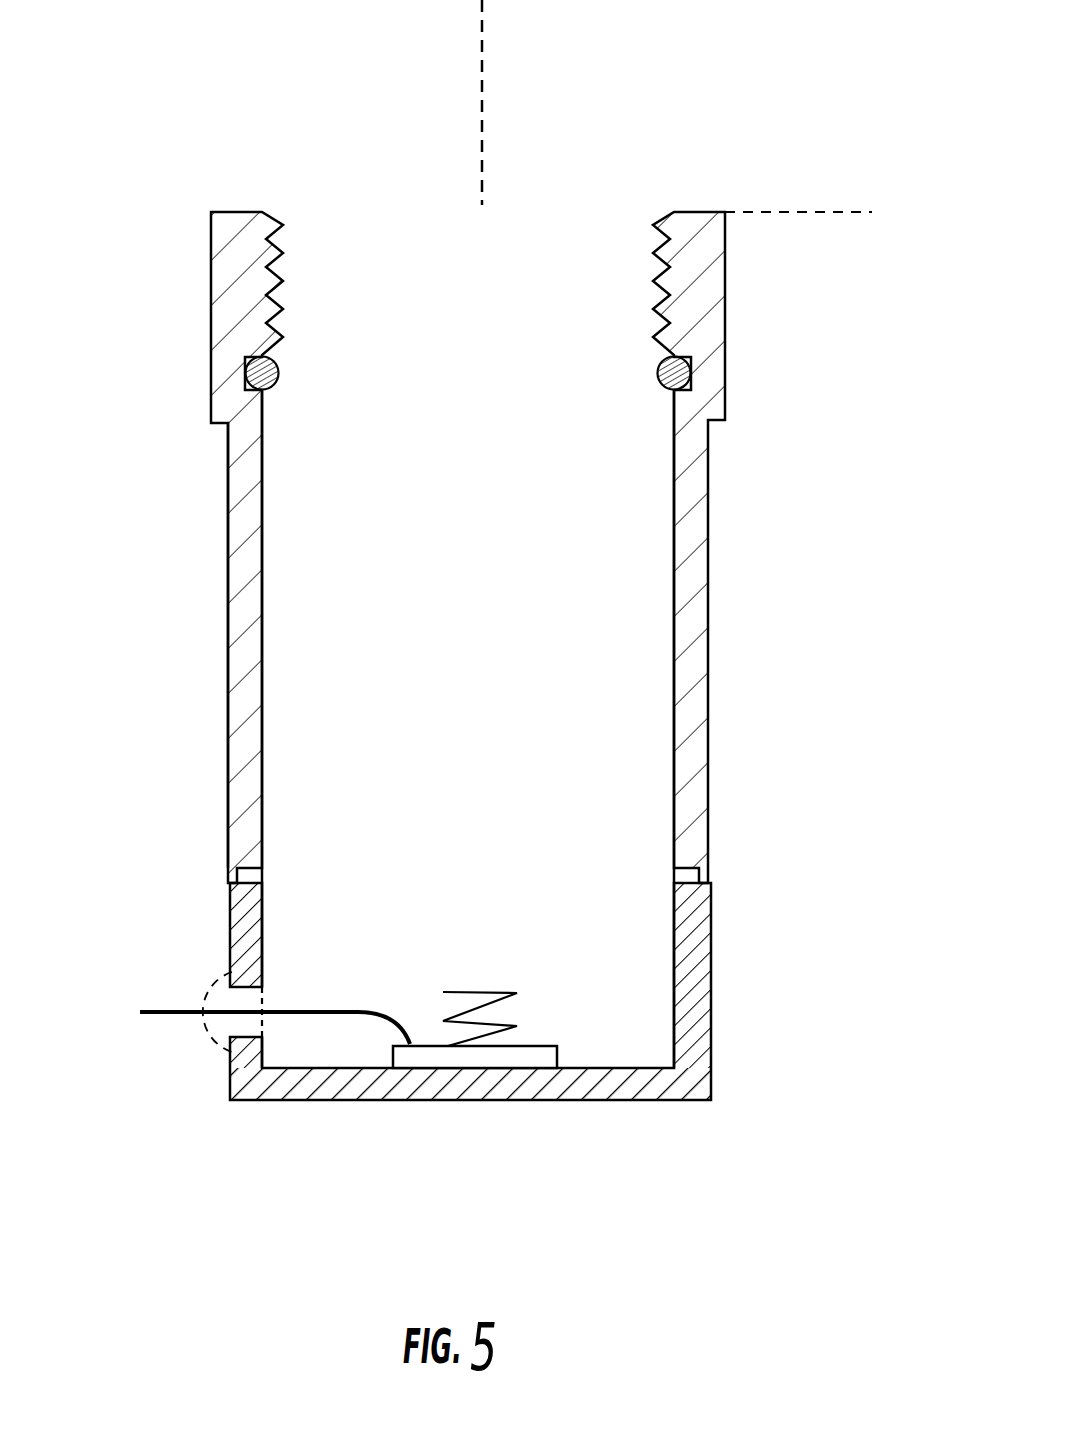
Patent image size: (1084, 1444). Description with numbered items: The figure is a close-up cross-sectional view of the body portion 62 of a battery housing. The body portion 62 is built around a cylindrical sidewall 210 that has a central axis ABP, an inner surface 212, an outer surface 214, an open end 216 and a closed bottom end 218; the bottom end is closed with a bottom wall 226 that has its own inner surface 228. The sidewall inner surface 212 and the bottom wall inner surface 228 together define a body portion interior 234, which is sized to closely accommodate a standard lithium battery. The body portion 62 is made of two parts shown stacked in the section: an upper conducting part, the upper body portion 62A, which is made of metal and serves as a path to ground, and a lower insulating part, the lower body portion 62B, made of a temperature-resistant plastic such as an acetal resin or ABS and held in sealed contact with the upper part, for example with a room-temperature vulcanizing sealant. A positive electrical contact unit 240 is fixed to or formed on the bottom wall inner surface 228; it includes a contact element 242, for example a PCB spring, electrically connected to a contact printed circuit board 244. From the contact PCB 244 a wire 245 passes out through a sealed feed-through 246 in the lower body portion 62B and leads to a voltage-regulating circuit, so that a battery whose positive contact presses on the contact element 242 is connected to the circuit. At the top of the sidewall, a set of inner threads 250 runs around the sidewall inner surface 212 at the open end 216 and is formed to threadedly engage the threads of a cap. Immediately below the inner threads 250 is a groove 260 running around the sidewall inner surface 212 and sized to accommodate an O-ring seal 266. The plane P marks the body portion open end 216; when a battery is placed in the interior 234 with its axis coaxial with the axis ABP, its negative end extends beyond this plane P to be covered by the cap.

The body portion 62 is at (496, 648).
The upper body portion 62A is at (496, 565).
The lower body portion 62B is at (510, 1066).
The plane P is at (826, 212).
The central axis ABP is at (484, 111).
The cylindrical sidewall 210 is at (376, 729).
The inner surface 212 is at (263, 692).
The outer surface 214 is at (228, 643).
The open end 216 is at (468, 473).
The closed bottom end 218 is at (408, 1066).
The bottom wall 226 is at (470, 1044).
The inner surface 228 is at (470, 1036).
The body portion interior 234 is at (488, 521).
The positive electrical contact unit 240 is at (526, 990).
The contact element 242 is at (480, 992).
The contact printed circuit board 244 is at (545, 1046).
The wire 245 is at (150, 1015).
The sealed feed-through 246 is at (184, 982).
The inner threads 250 is at (620, 279).
The groove 260 is at (247, 364).
The O-ring seal 266 is at (479, 368).